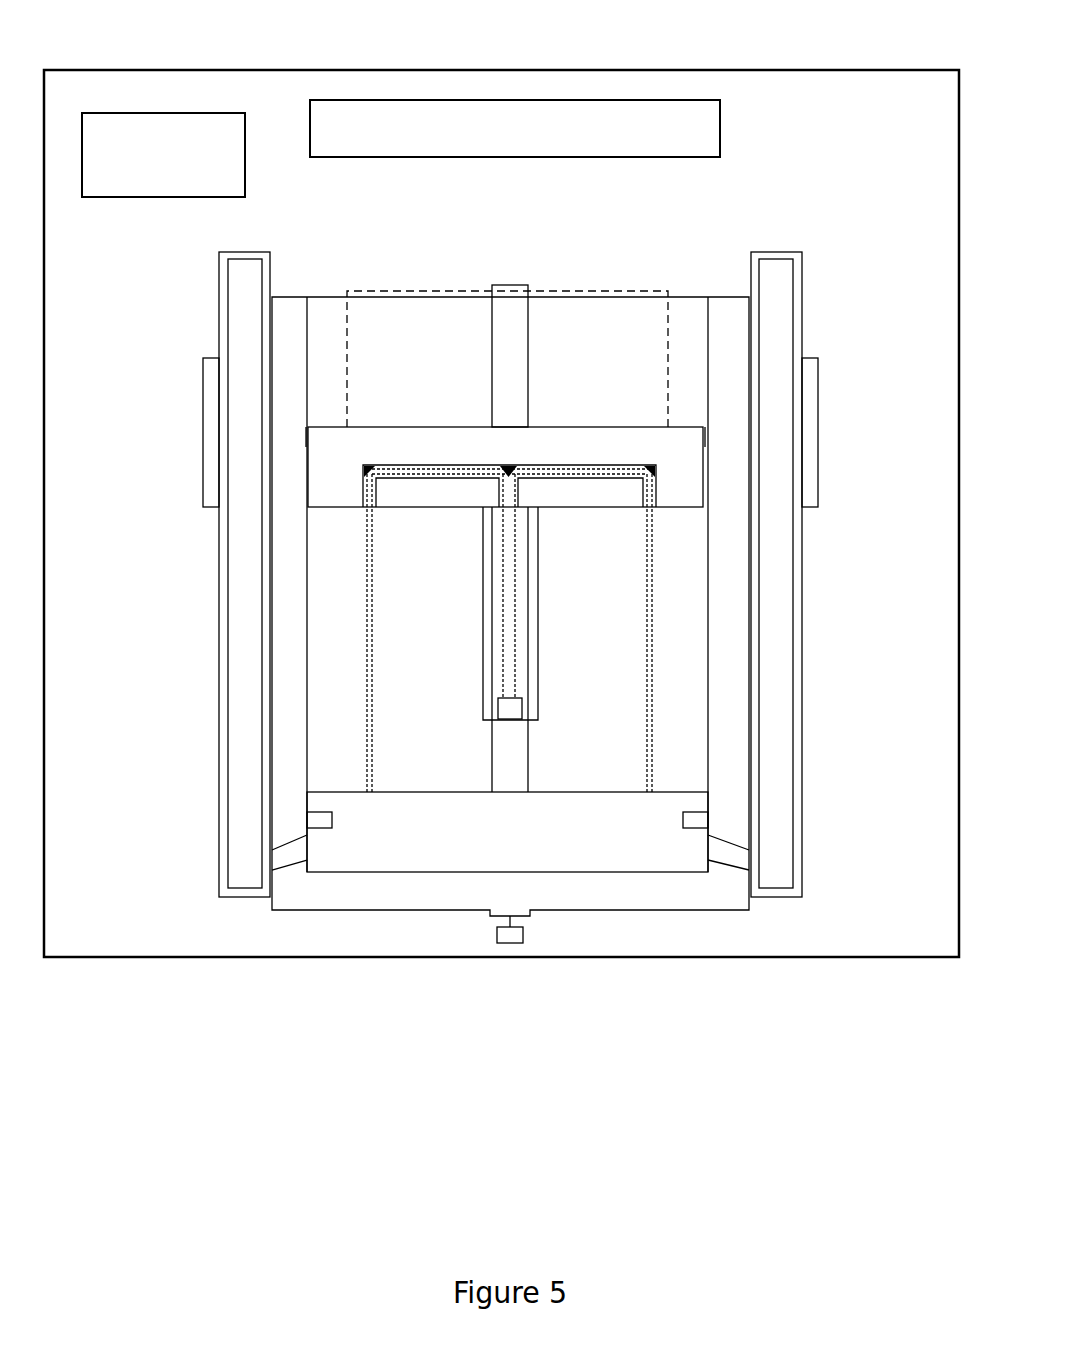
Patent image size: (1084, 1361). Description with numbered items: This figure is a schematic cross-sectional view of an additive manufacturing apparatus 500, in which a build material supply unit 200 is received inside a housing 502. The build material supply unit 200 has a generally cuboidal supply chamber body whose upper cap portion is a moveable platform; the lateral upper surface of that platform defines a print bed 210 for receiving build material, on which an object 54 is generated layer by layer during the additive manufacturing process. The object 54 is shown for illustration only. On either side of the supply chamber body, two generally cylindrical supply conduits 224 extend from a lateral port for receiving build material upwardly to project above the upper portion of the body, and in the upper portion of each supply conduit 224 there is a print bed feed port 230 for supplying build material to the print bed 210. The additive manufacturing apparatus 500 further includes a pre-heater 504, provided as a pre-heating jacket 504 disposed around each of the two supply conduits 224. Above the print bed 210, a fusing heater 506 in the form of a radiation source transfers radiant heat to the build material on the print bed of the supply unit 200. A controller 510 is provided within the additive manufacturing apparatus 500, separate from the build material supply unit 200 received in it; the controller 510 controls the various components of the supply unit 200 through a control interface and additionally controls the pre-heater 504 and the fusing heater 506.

The additive manufacturing apparatus 500 is at (838, 30).
The housing 502 is at (637, 957).
The controller 510 is at (163, 155).
The fusing heater 506 is at (515, 128).
The build material supply unit 200 is at (203, 790).
The print bed feed port 230 is at (268, 277).
The pre-heater 504 is at (203, 397).
The supply conduit 224 is at (219, 627).
The object 54 is at (417, 290).
The print bed 210 is at (571, 413).